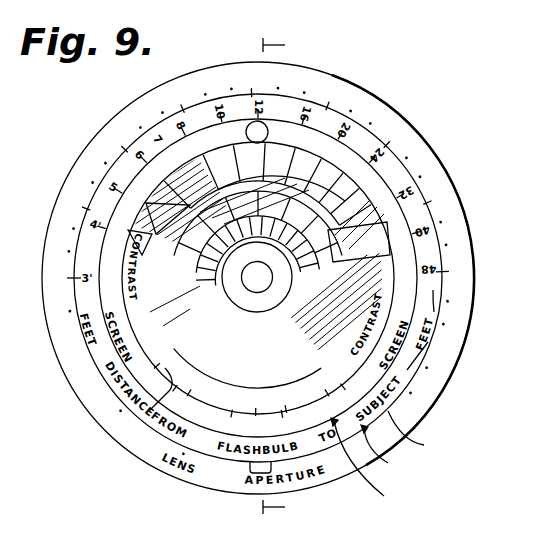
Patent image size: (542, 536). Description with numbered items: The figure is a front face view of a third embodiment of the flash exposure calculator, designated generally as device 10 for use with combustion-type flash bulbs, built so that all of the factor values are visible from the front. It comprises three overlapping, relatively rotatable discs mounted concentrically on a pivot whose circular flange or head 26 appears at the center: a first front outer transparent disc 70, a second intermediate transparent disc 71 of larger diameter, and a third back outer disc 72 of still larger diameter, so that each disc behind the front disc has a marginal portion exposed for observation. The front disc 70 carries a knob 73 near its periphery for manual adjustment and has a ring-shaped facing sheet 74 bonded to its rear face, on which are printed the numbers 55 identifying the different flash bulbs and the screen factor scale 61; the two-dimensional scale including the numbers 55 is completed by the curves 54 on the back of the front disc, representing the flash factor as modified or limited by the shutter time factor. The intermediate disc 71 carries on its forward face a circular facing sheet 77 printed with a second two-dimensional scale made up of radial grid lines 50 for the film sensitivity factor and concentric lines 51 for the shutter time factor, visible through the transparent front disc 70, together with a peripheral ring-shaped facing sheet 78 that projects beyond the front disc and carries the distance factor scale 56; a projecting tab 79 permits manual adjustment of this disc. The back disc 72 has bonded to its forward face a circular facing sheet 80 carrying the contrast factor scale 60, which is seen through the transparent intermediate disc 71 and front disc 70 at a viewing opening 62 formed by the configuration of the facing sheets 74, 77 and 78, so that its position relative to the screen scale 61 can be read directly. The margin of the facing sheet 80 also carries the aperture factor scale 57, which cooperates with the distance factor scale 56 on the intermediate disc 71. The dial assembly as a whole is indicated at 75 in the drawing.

The flash exposure calculator 10 is at (285, 277).
The circular flange or head 26 is at (272, 305).
The radial grid lines 50 is at (389, 245).
The concentric lines 51 is at (149, 212).
The curves 54 is at (360, 228).
The numbers identifying the flash bulbs 55 is at (290, 150).
The distance factor scale 56 is at (100, 192).
The aperture factor scale 57 is at (400, 146).
The contrast factor scale 60 is at (203, 390).
The screen factor scale 61 is at (272, 422).
The viewing opening 62 is at (310, 400).
The first front outer transparent disc 70 is at (367, 462).
The second intermediate transparent disc 71 is at (416, 432).
The third back outer disc 72 is at (433, 400).
The knob 73 is at (250, 124).
The ring-shaped facing sheet 74 is at (150, 410).
The dial 75 is at (536, 126).
The circular facing sheet 77 is at (165, 344).
The peripheral ring-shaped facing sheet 78 is at (384, 449).
The projecting tab 79 is at (244, 467).
The circular facing sheet 80 is at (453, 320).